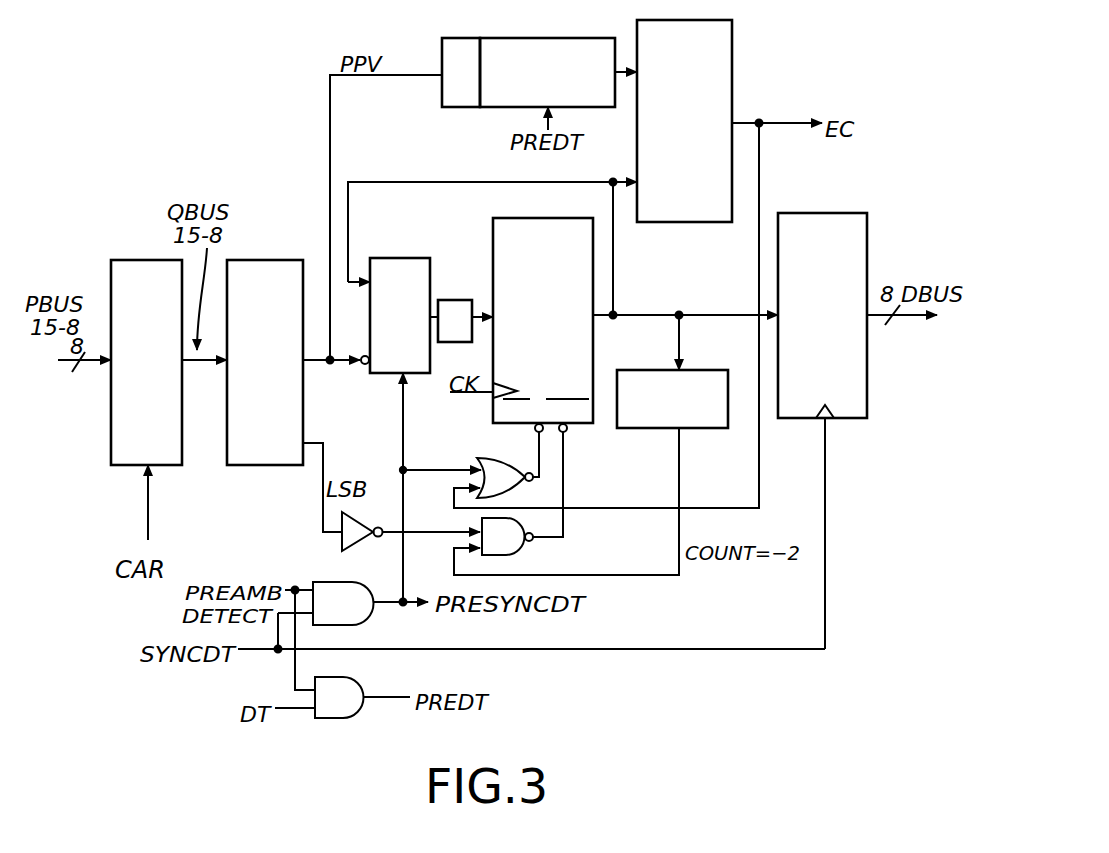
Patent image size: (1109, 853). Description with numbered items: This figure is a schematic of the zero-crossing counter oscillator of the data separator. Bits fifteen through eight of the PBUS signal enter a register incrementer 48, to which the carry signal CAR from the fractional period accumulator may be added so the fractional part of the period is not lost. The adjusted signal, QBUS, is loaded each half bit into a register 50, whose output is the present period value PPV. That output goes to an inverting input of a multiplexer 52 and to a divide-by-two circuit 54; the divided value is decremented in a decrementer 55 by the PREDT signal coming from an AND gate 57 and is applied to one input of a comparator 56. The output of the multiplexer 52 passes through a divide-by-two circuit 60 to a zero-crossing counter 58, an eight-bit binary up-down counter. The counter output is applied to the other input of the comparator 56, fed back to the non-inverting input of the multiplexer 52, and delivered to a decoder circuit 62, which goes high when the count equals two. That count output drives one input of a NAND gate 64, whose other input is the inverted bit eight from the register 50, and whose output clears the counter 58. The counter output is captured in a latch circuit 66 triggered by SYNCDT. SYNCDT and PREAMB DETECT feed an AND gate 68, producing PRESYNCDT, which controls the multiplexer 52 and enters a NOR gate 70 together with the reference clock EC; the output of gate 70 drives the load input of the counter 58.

The register incrementer 48 is at (110, 442).
The register 50 is at (304, 407).
The multiplexer 52 is at (432, 295).
The divide-by-two circuit 54 is at (466, 44).
The decrementer 55 is at (505, 38).
The comparator 56 is at (733, 38).
The AND gate 57 is at (345, 678).
The zero-crossing counter 58 is at (594, 336).
The divide-by-2 circuit 60 is at (468, 343).
The decoder circuit 62 is at (703, 370).
The NAND gate 64 is at (527, 552).
The latch circuit 66 is at (868, 243).
The AND gate 68 is at (357, 624).
The NOR gate 70 is at (489, 457).